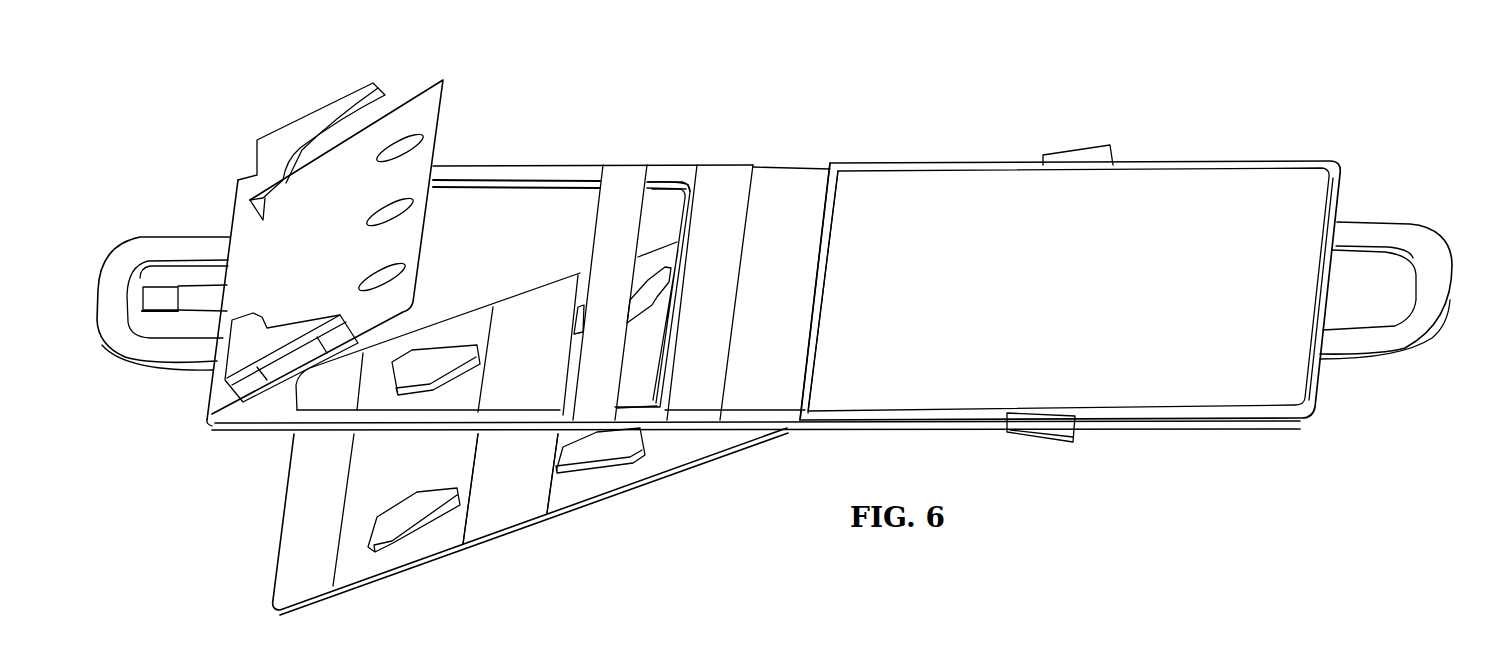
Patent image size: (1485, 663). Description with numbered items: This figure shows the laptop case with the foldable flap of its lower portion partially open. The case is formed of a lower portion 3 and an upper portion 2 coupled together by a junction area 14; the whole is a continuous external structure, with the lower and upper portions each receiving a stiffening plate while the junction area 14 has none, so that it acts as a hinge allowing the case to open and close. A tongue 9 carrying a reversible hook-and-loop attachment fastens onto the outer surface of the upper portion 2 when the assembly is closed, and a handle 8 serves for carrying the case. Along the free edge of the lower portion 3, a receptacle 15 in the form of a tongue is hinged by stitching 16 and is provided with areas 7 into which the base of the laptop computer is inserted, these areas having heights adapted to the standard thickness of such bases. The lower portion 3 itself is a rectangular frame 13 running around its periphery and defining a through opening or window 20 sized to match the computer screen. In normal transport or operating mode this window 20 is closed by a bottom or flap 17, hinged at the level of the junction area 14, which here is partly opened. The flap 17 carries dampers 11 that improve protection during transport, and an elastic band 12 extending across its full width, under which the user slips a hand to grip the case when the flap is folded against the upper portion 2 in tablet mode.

The upper portion 2 is at (1215, 415).
The lower portion 3 is at (222, 440).
The areas 7 is at (300, 130).
The handle 8 is at (123, 342).
The tongue 9 is at (190, 294).
The dampers 11 is at (612, 455).
The elastic band 12 is at (505, 510).
The rectangular frame 13 is at (578, 185).
The junction area 14 is at (793, 185).
The receptacle 15 is at (405, 108).
The stitching 16 is at (232, 247).
The bottom or flap 17 is at (357, 570).
The through opening or window 20 is at (462, 218).